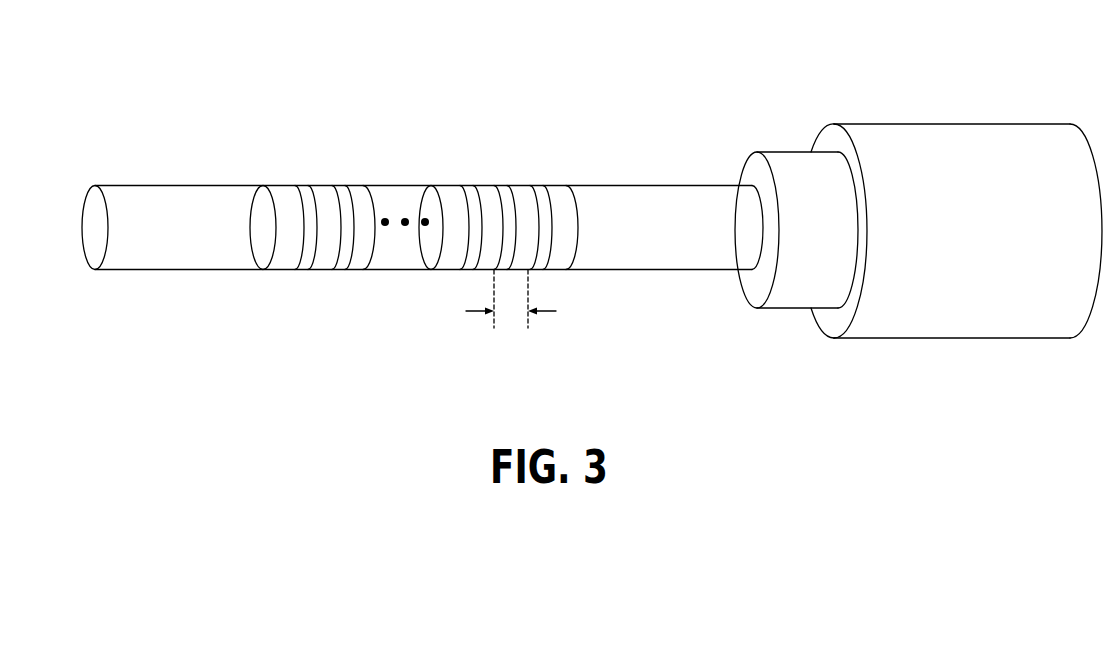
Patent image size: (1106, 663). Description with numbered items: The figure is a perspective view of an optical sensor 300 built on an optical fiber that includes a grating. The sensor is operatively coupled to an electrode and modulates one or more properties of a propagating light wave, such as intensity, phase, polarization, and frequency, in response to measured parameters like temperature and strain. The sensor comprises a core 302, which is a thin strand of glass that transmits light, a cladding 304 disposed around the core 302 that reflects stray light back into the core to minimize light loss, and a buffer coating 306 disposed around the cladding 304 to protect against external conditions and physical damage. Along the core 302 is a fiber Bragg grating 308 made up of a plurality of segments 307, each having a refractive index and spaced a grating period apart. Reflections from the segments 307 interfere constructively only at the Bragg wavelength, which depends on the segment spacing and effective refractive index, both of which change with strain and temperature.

The optical sensor 300 is at (280, 57).
The core 302 is at (180, 190).
The cladding 304 is at (798, 160).
The buffer coating 306 is at (973, 130).
The segments 307 is at (520, 195).
The fiber Bragg grating 308 is at (580, 134).